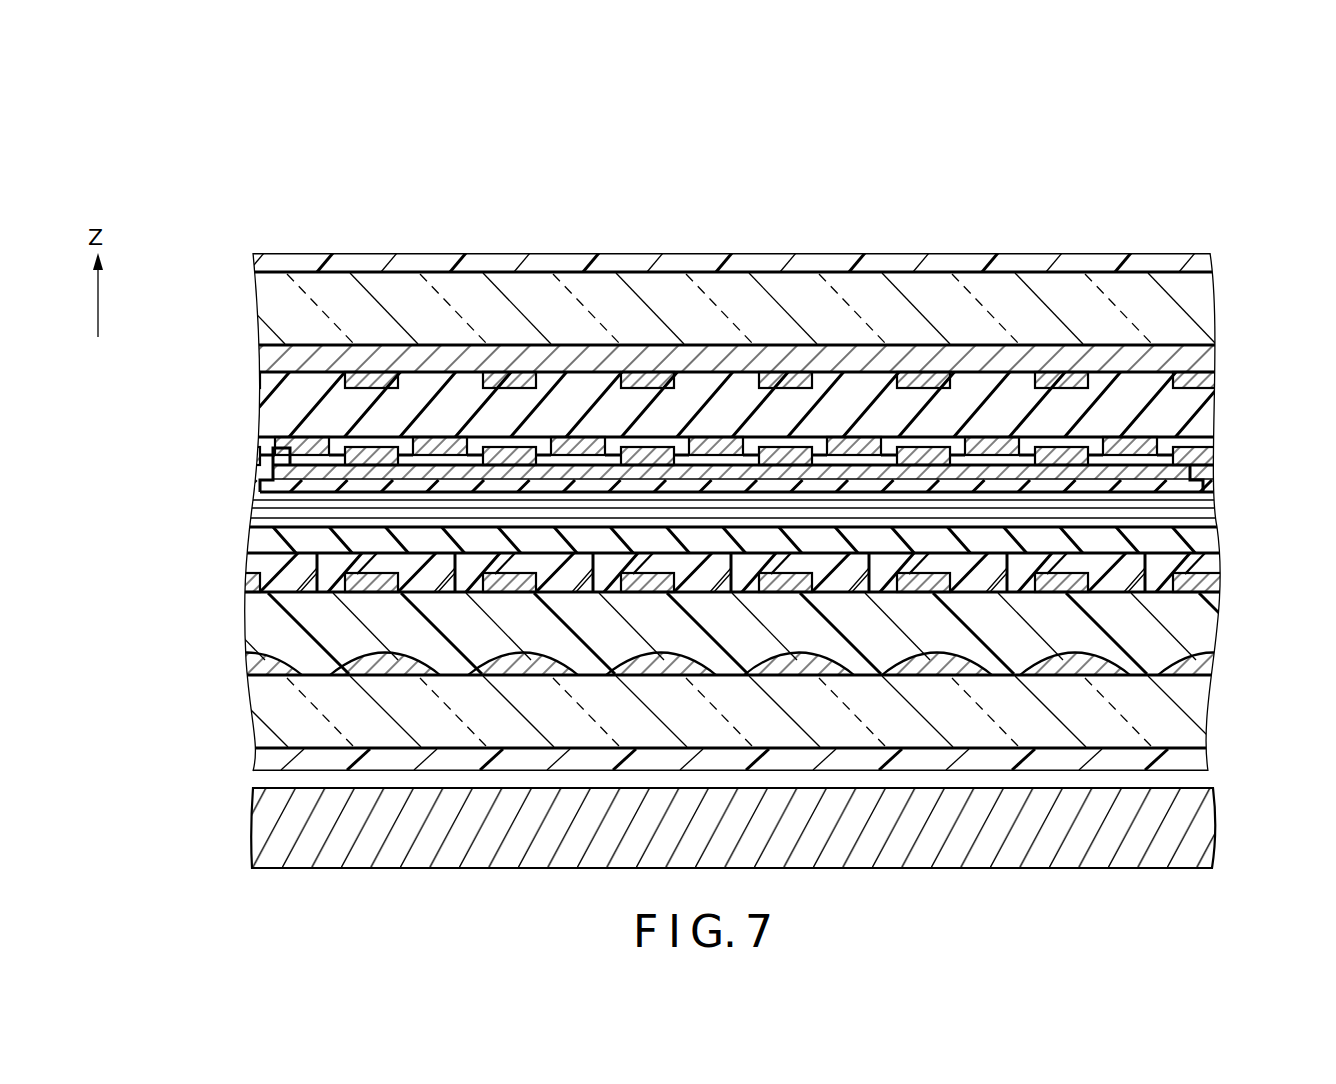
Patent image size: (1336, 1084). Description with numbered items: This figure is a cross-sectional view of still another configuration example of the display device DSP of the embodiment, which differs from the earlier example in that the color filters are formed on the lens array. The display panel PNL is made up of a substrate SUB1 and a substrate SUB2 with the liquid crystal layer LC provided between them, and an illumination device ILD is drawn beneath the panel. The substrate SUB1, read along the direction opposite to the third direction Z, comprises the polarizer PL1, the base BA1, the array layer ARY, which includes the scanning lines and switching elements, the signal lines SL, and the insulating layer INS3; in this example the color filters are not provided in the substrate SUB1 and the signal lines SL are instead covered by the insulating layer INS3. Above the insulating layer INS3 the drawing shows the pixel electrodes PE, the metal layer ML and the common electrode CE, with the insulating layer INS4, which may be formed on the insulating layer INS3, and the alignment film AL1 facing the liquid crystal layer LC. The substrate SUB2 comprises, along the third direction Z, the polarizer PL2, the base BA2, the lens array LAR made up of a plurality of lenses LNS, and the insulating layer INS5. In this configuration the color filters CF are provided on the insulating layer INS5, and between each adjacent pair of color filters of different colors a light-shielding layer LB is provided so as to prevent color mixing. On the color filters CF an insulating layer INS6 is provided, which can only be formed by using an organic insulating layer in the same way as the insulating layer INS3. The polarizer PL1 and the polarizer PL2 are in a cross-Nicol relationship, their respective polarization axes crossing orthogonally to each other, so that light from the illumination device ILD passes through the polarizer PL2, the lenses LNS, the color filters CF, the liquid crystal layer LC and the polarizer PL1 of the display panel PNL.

The display device DSP is at (997, 122).
The display panel PNL is at (1079, 222).
The substrate SUB1 is at (1229, 273).
The substrate SUB2 is at (1229, 532).
The polarizer PL1 is at (252, 262).
The base BA1 is at (252, 299).
The signal lines SL is at (366, 372).
The array layer ARY is at (255, 358).
The insulating layer INS3 is at (257, 408).
The pixel electrode PE is at (428, 440).
The metal layer ML is at (290, 452).
The common electrode CE is at (272, 466).
The insulating layer INS4 is at (1145, 486).
The alignment film AL1 is at (1198, 484).
The liquid crystal layer LC is at (254, 513).
The insulating layer INS6 is at (257, 540).
The color filters CF is at (292, 578).
The light-shielding layer LB is at (258, 568).
The insulating layer INS5 is at (256, 630).
The lenses LNS is at (257, 667).
The lens array LAR is at (1110, 668).
The base BA2 is at (254, 712).
The polarizer PL2 is at (255, 762).
The illumination device ILD is at (255, 829).